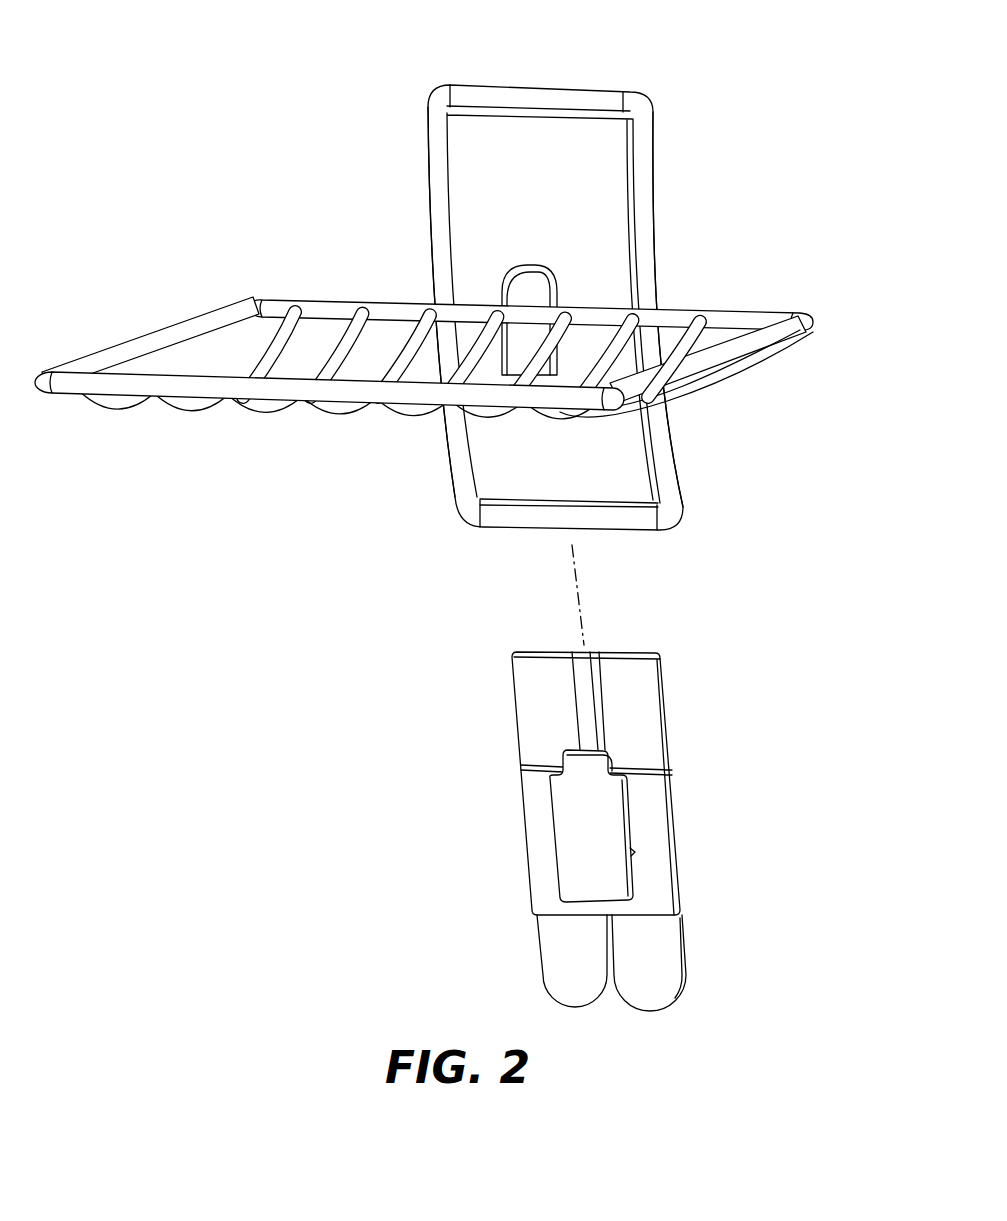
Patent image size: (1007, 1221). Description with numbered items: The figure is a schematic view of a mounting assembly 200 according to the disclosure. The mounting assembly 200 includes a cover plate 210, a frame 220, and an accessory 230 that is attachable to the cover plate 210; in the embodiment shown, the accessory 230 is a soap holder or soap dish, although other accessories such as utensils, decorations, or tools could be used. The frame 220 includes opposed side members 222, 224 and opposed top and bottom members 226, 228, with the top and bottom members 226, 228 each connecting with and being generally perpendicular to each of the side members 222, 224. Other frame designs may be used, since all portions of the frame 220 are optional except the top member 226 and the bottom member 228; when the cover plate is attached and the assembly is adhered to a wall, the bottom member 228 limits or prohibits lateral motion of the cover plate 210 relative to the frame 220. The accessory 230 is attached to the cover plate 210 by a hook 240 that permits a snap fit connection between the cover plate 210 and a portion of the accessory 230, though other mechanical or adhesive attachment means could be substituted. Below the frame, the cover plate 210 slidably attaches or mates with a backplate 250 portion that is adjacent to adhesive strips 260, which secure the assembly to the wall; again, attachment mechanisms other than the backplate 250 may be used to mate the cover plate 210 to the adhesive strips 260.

The mounting assembly 200 is at (720, 90).
The cover plate 210 is at (490, 137).
The frame 220 is at (541, 300).
The side member 222 is at (427, 193).
The side member 224 is at (647, 165).
The top member 226 is at (548, 95).
The bottom member 228 is at (608, 530).
The accessory 230 is at (717, 355).
The hook 240 is at (520, 290).
The backplate 250 is at (640, 834).
The adhesive strips 260 is at (632, 710).